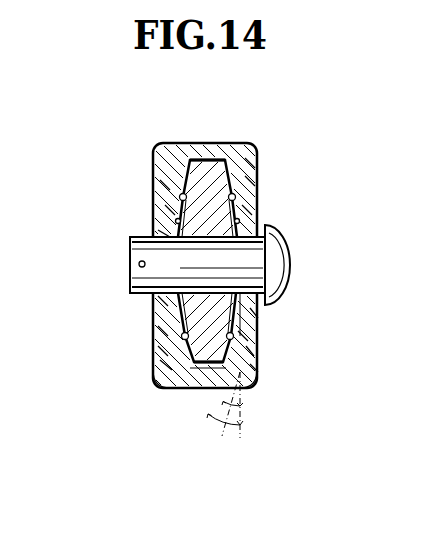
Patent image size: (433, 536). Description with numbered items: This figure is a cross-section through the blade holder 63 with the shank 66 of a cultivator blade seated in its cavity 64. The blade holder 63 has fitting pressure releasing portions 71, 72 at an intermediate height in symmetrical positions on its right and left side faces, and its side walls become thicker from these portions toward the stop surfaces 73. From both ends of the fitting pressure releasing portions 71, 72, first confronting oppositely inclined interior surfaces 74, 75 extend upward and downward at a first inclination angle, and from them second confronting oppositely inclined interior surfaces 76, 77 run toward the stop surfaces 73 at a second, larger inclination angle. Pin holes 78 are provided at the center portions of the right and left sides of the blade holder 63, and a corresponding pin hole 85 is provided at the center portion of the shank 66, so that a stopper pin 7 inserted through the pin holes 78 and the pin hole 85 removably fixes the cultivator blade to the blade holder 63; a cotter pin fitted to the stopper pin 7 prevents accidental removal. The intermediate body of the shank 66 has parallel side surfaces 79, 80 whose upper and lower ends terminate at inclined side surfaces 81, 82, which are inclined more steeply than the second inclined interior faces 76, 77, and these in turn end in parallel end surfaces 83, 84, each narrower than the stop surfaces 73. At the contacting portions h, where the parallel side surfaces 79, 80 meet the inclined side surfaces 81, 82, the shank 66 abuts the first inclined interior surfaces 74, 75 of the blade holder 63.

The stopper pin 7 is at (289, 261).
The blade holder 63 is at (160, 371).
The cavity 64 is at (176, 386).
The shank 66 is at (212, 372).
The fitting pressure releasing portion 71 is at (160, 234).
The fitting pressure releasing portion 72 is at (266, 222).
The stop surface 73 is at (196, 160).
The first inclined interior surface 74 is at (160, 331).
The first inclined interior surface 75 is at (255, 350).
The second inclined interior surface 76 is at (168, 366).
The second inclined interior surface 77 is at (256, 388).
The pin hole 78 is at (160, 301).
The parallel side surface 79 is at (165, 215).
The parallel side surface 80 is at (252, 212).
The inclined side surface 81 is at (162, 158).
The inclined side surface 82 is at (258, 165).
The parallel end surface 83 is at (209, 160).
The parallel end surface 84 is at (232, 370).
The pin hole 85 is at (238, 336).
The contacting portion h is at (165, 187).